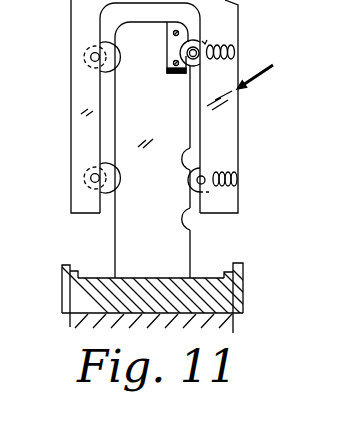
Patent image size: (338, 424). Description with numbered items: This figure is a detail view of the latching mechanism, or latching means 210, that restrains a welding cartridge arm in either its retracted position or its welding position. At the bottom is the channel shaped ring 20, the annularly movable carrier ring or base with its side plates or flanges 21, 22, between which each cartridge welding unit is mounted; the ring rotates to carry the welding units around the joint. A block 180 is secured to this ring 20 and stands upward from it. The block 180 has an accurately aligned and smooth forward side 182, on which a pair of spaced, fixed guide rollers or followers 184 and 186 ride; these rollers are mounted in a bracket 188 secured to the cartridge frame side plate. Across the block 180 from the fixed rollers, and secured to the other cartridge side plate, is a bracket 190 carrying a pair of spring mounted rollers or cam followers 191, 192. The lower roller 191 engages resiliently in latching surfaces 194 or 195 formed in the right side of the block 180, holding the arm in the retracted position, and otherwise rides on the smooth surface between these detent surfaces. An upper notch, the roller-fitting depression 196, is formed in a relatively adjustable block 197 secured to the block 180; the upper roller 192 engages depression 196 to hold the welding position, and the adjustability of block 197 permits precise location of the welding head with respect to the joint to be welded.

The channel shaped ring 20 is at (215, 308).
The side plate 21 is at (62, 282).
The side plate 22 is at (243, 277).
The block 180 is at (123, 248).
The forward side 182 is at (110, 123).
The guide roller 184 is at (78, 62).
The guide roller 186 is at (77, 183).
The bracket 188 is at (82, 21).
The bracket 190 is at (225, 122).
The lower roller 191 is at (200, 167).
The upper roller 192 is at (203, 36).
The latching surface 194 is at (183, 222).
The latching surface 195 is at (183, 162).
The roller-fitting depression 196 is at (183, 37).
The adjustable block 197 is at (178, 57).
The latching means 210 is at (272, 70).